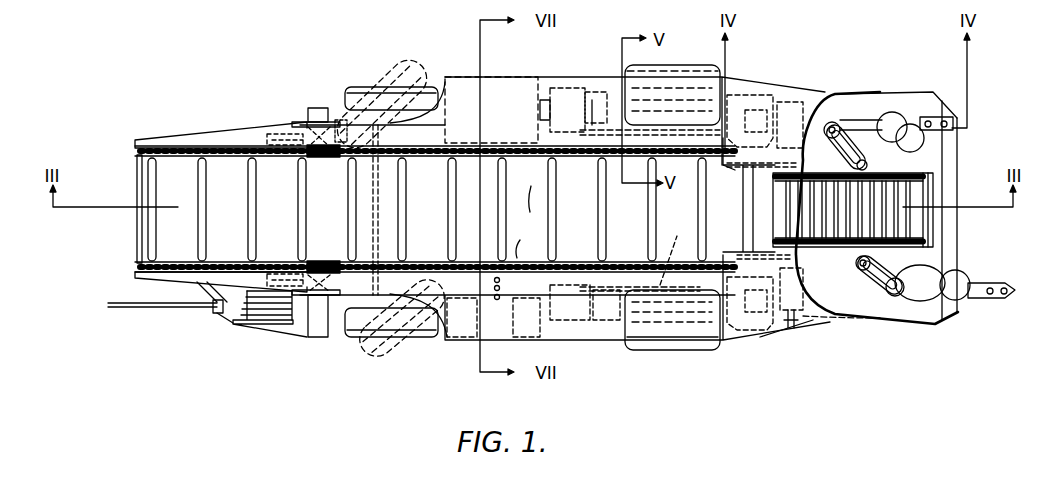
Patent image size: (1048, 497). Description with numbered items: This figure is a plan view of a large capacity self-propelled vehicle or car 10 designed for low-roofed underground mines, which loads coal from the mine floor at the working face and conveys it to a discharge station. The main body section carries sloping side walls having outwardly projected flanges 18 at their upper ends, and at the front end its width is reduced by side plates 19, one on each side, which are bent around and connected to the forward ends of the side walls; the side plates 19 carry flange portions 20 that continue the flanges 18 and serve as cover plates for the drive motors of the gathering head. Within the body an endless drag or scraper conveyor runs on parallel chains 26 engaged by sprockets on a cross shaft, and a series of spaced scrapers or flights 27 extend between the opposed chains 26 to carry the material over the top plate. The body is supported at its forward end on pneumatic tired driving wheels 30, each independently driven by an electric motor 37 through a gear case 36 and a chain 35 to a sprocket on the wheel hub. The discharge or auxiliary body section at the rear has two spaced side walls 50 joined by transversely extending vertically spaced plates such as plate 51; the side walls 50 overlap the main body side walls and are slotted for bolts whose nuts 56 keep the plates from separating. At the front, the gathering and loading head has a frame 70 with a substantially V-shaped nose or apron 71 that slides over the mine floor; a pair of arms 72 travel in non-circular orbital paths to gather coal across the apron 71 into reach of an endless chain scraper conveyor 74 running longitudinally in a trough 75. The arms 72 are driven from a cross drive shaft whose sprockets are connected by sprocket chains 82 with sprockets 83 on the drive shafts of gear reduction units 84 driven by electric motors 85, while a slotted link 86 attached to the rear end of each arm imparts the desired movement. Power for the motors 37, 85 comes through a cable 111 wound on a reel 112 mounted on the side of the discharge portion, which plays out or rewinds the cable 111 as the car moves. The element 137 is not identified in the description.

The vehicle or car 10 is at (771, 343).
The outwardly projected flanges 18 is at (548, 84).
The side plates 19 is at (742, 252).
The flange portions 20 is at (737, 87).
The parallel chains 26 is at (525, 222).
The scrapers or flights 27 is at (417, 214).
The pneumatic tired driving wheels 30 is at (675, 345).
The chain 35 is at (674, 250).
The gear case 36 is at (617, 325).
The electric motor 37 is at (567, 315).
The side walls 50 is at (190, 134).
The plate 51 is at (435, 209).
The nuts 56 is at (307, 133).
The frame 70 is at (908, 318).
The V-shaped nose or apron 71 is at (955, 248).
The arms 72 is at (912, 117).
The endless chain scraper conveyor 74 is at (902, 180).
The trough 75 is at (927, 193).
The sprocket chains 82 is at (871, 100).
The sprockets 83 is at (795, 108).
The gear reduction units 84 is at (822, 92).
The electric motors 85 is at (757, 122).
The slotted link 86 is at (868, 160).
The cable 111 is at (122, 308).
The reel 112 is at (263, 323).
The housing 137 is at (508, 90).